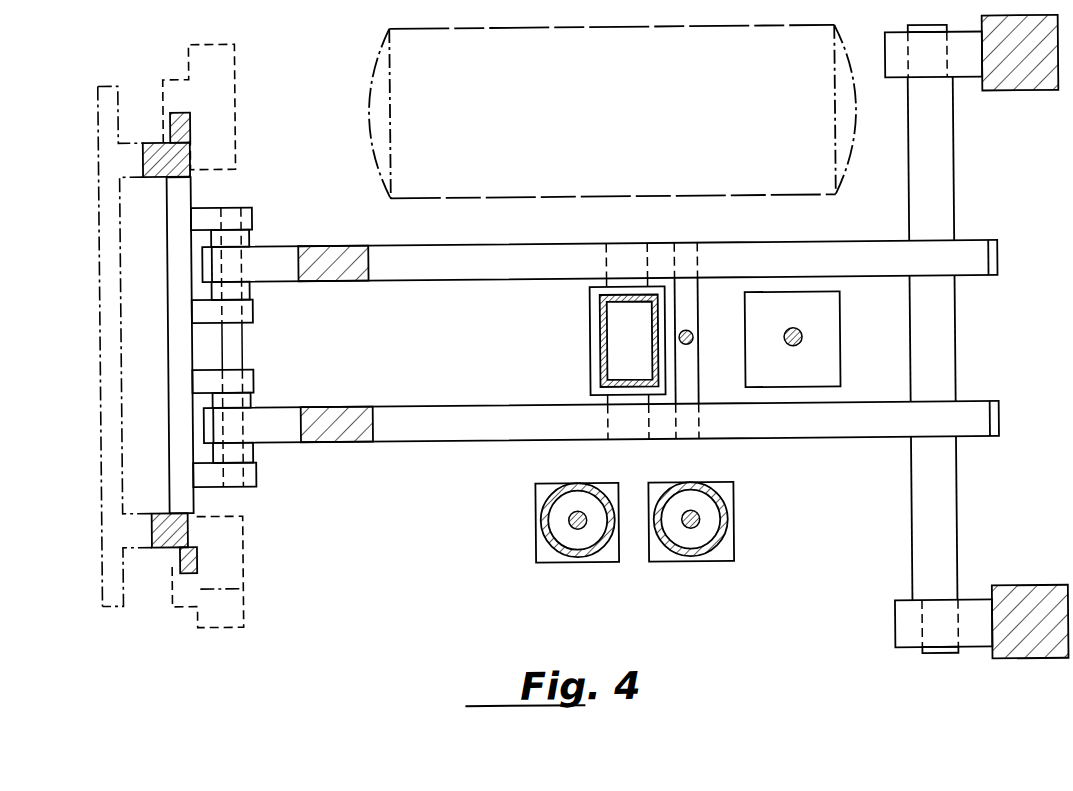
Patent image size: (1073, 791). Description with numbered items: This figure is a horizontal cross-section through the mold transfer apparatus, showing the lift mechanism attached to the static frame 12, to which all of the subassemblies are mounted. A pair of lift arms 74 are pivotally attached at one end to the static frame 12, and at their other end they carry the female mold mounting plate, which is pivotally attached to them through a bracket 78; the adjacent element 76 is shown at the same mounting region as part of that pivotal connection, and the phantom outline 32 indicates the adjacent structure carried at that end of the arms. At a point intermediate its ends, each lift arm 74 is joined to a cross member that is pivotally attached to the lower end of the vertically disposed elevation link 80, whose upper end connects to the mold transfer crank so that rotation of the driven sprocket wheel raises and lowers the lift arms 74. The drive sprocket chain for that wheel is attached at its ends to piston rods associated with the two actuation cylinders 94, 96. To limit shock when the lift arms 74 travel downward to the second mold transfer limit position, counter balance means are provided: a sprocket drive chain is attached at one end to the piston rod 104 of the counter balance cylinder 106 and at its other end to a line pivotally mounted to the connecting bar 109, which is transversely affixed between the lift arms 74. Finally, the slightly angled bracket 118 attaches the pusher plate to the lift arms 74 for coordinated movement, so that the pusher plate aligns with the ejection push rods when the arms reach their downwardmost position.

The static frame 12 is at (1018, 594).
The wheel assembly outline 32 is at (241, 586).
The lift arms 74 is at (498, 257).
The nut 76 is at (257, 452).
The bracket 78 is at (216, 477).
The elevation link 80 is at (604, 343).
The actuation cylinder 94 is at (597, 553).
The actuation cylinder 96 is at (708, 553).
The piston rod 104 is at (800, 347).
The counter balance cylinder 106 is at (823, 342).
The connecting bar 109 is at (688, 313).
The bracket 118 is at (344, 272).